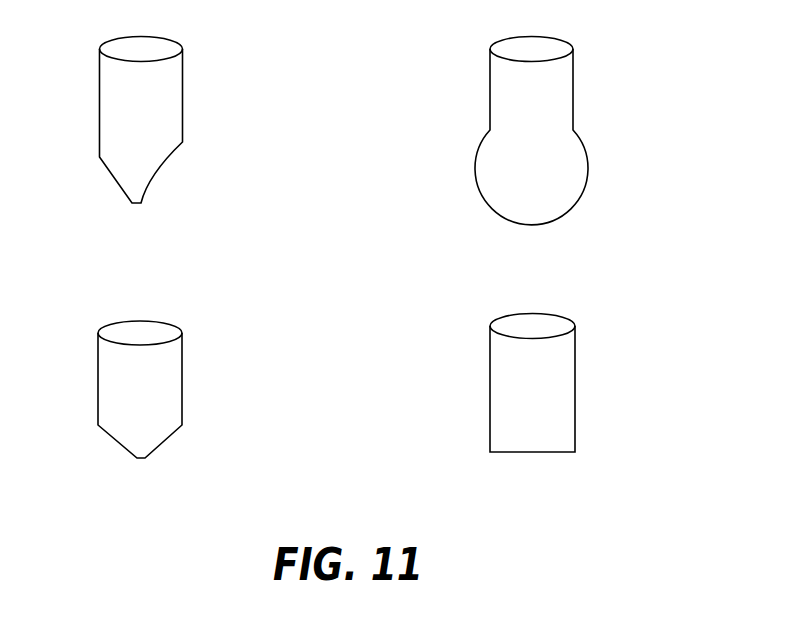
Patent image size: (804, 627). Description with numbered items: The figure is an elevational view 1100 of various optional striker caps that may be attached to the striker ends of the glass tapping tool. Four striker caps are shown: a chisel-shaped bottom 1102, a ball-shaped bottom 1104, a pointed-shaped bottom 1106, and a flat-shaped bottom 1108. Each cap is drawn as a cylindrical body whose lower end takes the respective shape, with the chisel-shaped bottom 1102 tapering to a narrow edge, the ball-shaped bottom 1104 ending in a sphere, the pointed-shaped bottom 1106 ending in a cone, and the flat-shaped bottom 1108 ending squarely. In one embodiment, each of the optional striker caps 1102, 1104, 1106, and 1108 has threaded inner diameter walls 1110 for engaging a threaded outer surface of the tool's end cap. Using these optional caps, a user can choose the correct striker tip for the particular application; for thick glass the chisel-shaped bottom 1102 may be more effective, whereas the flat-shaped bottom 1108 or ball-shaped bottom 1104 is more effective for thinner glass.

The elevational view 1100 is at (470, 522).
The chisel-shaped bottom 1102 is at (182, 97).
The ball-shaped bottom 1104 is at (573, 105).
The pointed-shaped bottom 1106 is at (182, 386).
The flat-shaped bottom 1108 is at (575, 403).
The threaded inner diameter walls 1110 is at (562, 325).